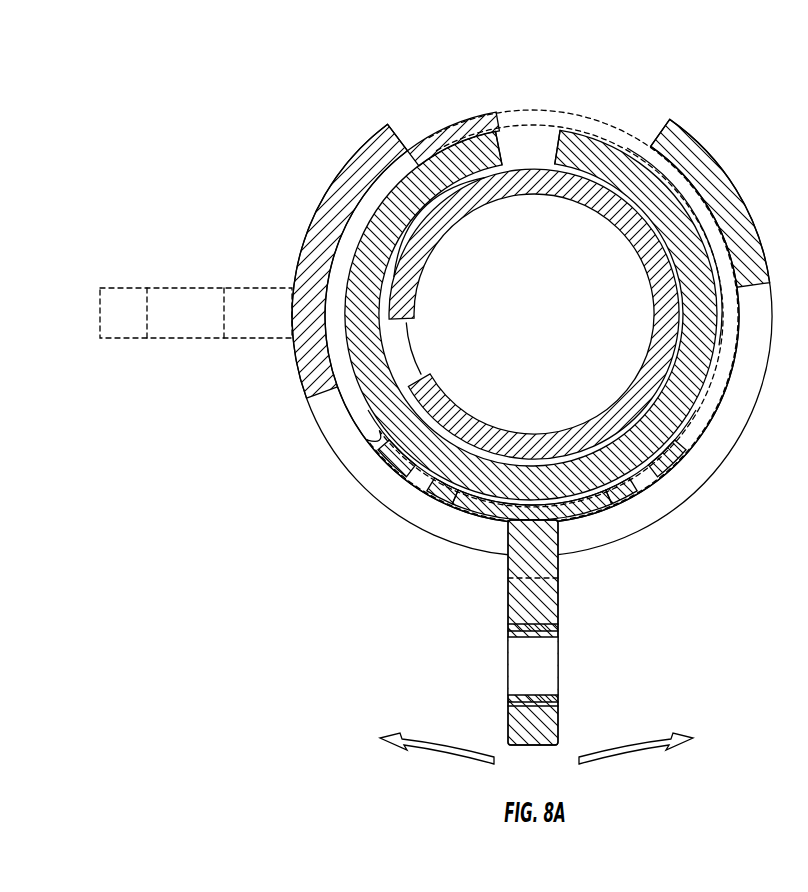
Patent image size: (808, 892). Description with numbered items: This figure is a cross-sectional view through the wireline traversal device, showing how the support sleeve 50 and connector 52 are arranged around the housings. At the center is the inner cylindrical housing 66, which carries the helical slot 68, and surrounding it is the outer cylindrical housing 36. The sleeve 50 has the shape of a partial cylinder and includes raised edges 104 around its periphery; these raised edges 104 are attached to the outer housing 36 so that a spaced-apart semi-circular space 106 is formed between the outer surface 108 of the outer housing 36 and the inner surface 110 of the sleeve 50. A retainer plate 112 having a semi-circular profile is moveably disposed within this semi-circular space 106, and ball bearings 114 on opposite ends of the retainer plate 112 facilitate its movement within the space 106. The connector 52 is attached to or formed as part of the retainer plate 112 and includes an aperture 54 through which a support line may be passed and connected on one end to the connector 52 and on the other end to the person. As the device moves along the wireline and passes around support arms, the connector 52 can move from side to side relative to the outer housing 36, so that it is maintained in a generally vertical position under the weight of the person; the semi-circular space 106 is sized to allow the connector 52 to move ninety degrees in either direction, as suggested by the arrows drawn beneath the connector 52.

The outer cylindrical housing 36 is at (500, 150).
The support sleeve 50 is at (345, 182).
The connector 52 is at (125, 340).
The aperture 54 is at (553, 652).
The inner cylindrical housing 66 is at (537, 170).
The helical slot 68 is at (405, 342).
The raised edges 104 is at (412, 127).
The semi-circular space 106 is at (727, 253).
The outer surface 108 is at (700, 395).
The inner surface 110 is at (365, 440).
The retainer plate 112 is at (405, 487).
The ball bearings 114 is at (388, 458).